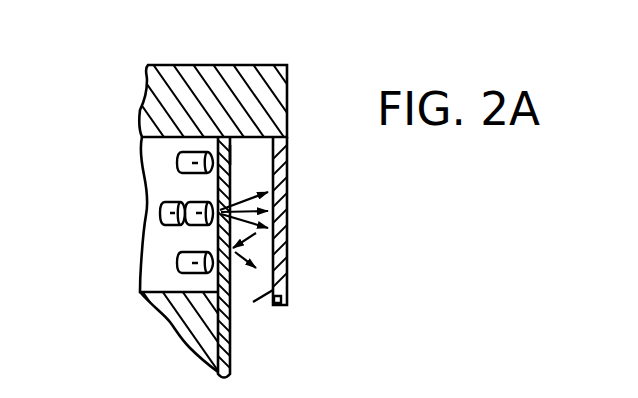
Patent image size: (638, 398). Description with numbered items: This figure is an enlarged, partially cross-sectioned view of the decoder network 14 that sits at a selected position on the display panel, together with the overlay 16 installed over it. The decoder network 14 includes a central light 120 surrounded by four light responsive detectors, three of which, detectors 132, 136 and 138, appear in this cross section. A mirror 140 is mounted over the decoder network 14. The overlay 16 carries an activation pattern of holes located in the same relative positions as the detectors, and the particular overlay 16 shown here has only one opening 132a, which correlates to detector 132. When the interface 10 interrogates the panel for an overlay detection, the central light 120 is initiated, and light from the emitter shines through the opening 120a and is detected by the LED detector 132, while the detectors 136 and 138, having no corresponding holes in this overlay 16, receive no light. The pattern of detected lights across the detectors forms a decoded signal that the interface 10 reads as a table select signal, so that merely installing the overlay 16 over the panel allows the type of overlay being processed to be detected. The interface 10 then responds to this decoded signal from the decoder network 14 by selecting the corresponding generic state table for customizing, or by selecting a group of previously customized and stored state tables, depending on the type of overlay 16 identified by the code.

The interface 10 is at (268, 53).
The decoder network 14 is at (140, 172).
The overlay 16 is at (232, 351).
The central light 120 is at (218, 217).
The opening 120a is at (258, 232).
The light responsive detector 132 is at (192, 152).
The hole 132a is at (230, 155).
The light responsive detector 136 is at (180, 279).
The light responsive detector 138 is at (216, 206).
The mirror 140 is at (253, 302).